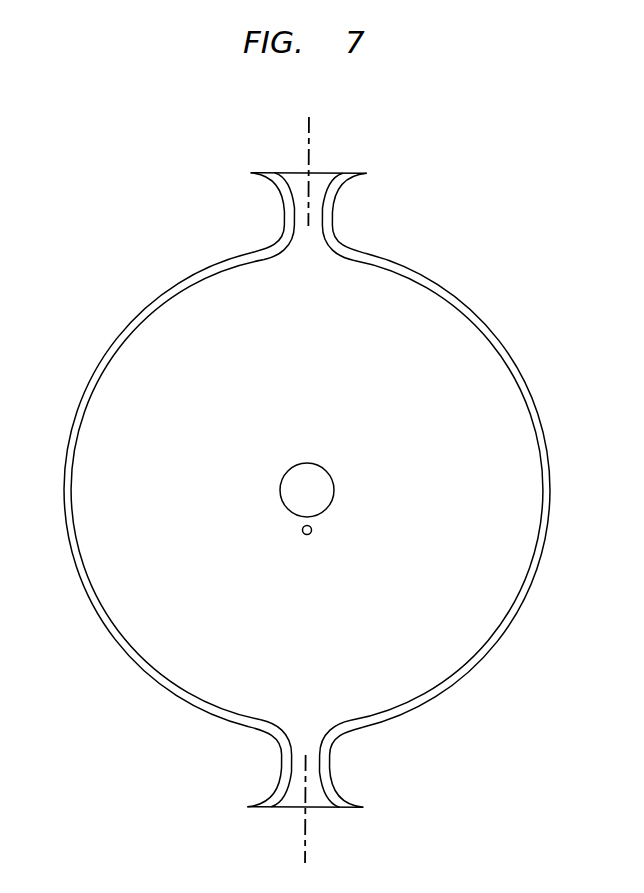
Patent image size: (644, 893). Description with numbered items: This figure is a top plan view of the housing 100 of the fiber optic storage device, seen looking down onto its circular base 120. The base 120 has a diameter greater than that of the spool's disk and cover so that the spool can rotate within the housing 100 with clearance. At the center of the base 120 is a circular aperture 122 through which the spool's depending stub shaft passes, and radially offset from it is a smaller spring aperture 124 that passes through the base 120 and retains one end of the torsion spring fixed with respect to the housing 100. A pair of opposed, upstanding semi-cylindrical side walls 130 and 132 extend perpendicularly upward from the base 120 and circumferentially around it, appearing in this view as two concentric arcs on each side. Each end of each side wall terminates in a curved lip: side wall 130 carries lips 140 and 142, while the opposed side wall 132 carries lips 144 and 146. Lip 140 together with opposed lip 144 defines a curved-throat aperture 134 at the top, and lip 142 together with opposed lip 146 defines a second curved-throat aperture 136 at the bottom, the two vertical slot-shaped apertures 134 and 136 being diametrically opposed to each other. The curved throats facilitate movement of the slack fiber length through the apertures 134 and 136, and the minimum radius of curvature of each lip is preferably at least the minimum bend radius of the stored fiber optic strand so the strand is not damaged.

The housing 100 is at (335, 491).
The circular base 120 is at (335, 491).
The circular aperture 122 is at (335, 490).
The spring aperture 124 is at (313, 530).
The side wall 130 is at (518, 375).
The side wall 132 is at (188, 283).
The slotted aperture 134 is at (295, 186).
The slotted aperture 136 is at (299, 797).
The curved lip 140 is at (325, 213).
The curved lip 142 is at (325, 767).
The curved lip 144 is at (287, 213).
The curved lip 146 is at (292, 767).